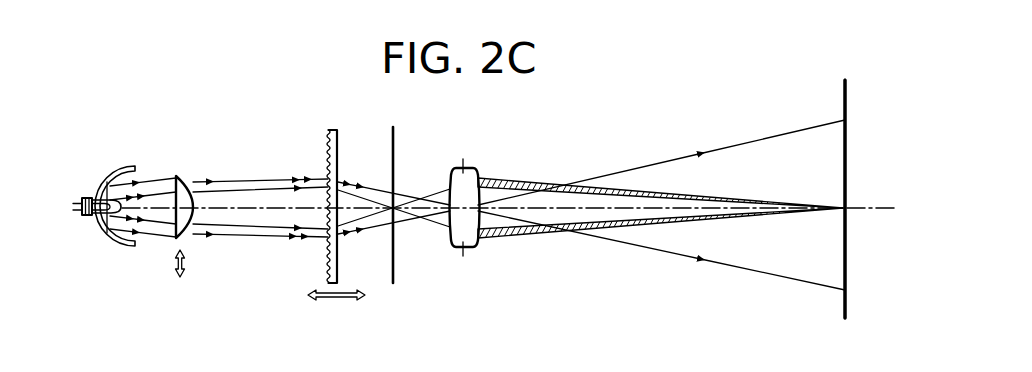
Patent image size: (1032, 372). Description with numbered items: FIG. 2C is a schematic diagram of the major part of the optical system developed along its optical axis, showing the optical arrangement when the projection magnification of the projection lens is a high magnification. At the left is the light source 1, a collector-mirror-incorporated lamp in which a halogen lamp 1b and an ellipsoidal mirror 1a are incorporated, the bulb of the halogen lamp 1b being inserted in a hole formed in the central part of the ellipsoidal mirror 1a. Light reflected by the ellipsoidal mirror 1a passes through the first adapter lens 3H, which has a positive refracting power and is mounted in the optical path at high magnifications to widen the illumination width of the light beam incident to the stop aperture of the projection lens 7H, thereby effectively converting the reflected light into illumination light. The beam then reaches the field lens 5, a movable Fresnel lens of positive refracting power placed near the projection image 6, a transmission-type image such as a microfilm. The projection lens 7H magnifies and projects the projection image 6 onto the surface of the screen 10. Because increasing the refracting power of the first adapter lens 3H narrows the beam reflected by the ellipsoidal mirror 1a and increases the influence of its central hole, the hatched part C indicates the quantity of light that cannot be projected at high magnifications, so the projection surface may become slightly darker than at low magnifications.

The light source 1 is at (129, 128).
The ellipsoidal mirror 1a is at (107, 181).
The halogen lamp 1b is at (83, 197).
The first adapter lens 3H is at (183, 176).
The field lens 5 is at (328, 133).
The projection image 6 is at (393, 143).
The projection lens for high magnification 7H is at (468, 168).
The screen 10 is at (847, 135).
The hatched part C is at (750, 199).